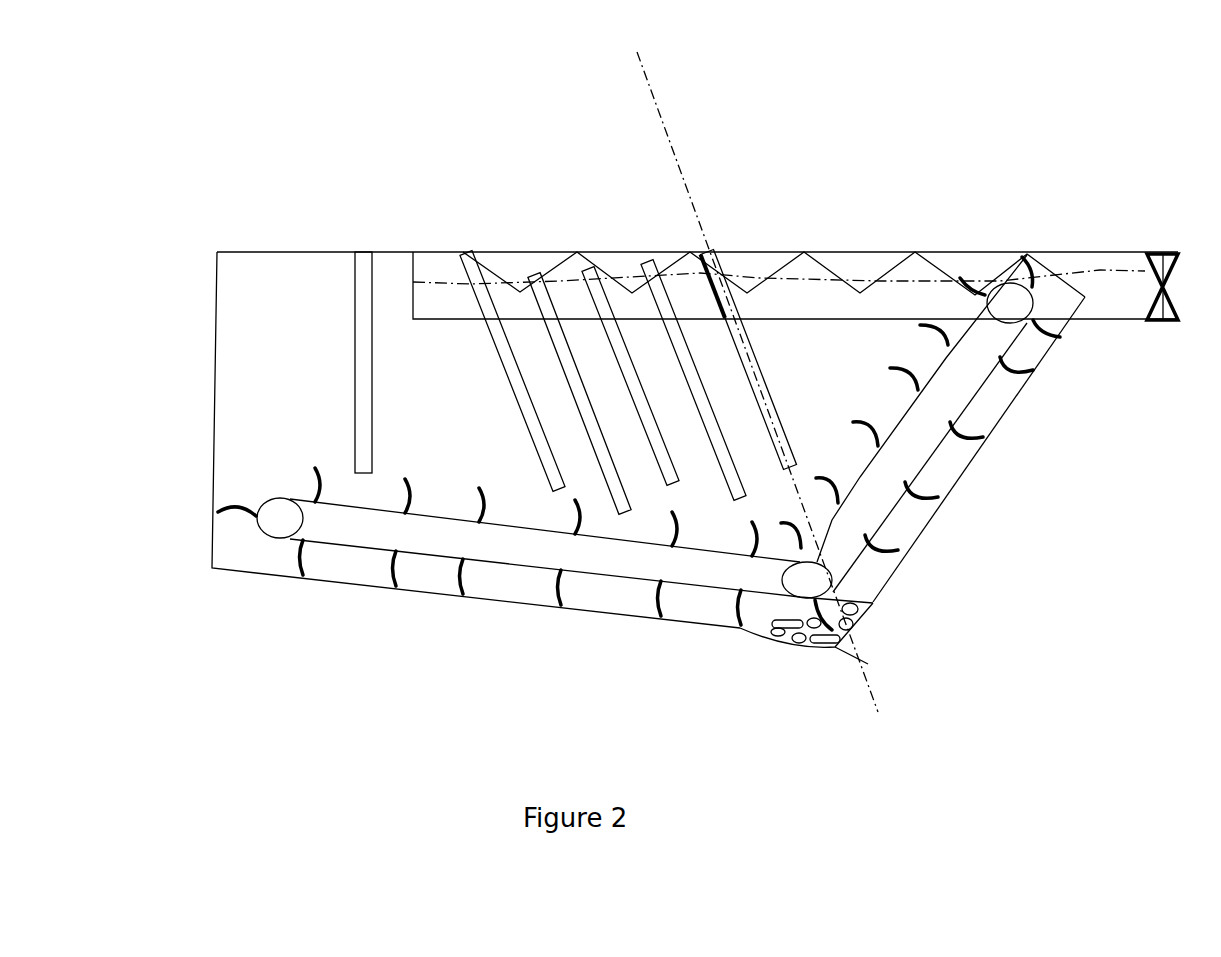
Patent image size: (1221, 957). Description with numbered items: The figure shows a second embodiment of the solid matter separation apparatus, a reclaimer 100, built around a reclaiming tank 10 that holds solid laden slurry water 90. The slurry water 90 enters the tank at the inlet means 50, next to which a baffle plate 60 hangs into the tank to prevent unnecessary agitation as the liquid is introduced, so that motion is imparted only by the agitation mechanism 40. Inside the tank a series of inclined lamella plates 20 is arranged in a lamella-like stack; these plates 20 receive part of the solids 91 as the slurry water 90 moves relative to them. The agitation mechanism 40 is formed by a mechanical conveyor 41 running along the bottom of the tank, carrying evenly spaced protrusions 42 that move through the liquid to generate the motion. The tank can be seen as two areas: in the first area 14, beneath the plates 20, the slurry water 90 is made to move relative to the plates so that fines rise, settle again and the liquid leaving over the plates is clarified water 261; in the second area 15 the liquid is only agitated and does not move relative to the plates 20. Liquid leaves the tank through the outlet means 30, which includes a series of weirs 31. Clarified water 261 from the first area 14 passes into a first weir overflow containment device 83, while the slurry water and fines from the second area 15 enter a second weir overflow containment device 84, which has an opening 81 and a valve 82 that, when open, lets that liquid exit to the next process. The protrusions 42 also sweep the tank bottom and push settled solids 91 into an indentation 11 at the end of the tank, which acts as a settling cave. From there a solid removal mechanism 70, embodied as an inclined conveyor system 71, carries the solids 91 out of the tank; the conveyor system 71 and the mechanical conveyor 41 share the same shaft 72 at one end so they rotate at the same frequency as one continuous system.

The reclaiming tank 10 is at (257, 460).
The indentation 11 is at (792, 658).
The first area 14 is at (451, 423).
The second area 15 is at (904, 408).
The lamella plates 20 is at (508, 385).
The outlet means 30 is at (583, 183).
The weirs 31 is at (547, 268).
The agitation mechanism 40 is at (398, 605).
The mechanical conveyor 41 is at (265, 535).
The protrusions 42 is at (728, 622).
The inlet means 50 is at (270, 248).
The baffle plate 60 is at (370, 248).
The solid removal mechanism 70 is at (923, 538).
The conveyor system 71 is at (1027, 323).
The shaft 72 is at (875, 604).
The opening 81 is at (1138, 293).
The valve 82 is at (1148, 256).
The first weir overflow containment device 83 is at (632, 290).
The second weir overflow containment device 84 is at (903, 297).
The solid laden slurry water 90 is at (283, 165).
The solids 91 is at (862, 676).
The reclaimer 100 is at (807, 213).
The clarified water 261 is at (740, 283).